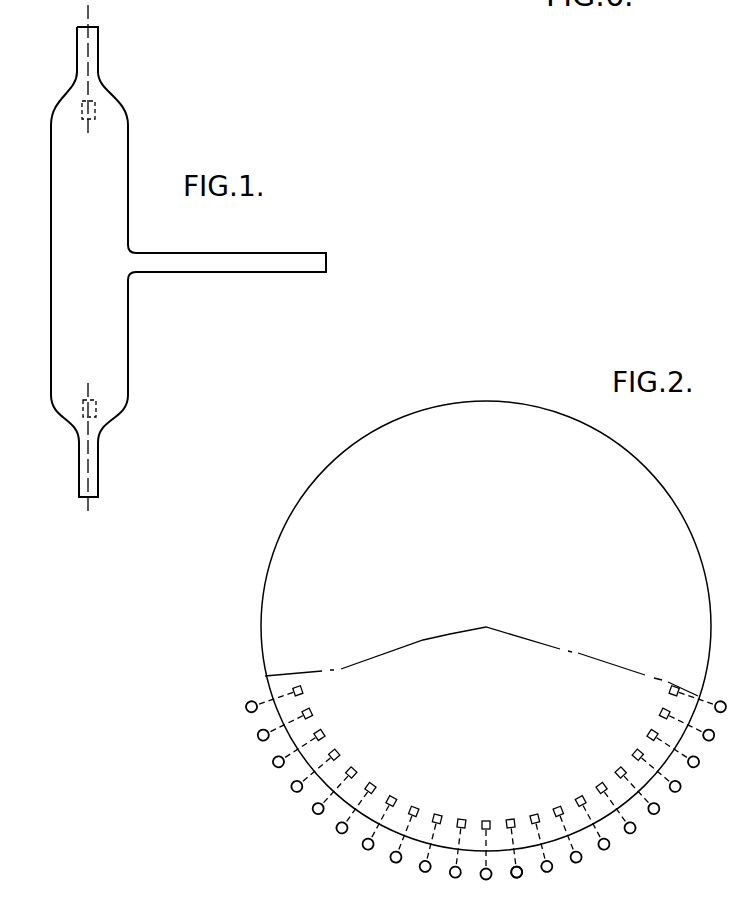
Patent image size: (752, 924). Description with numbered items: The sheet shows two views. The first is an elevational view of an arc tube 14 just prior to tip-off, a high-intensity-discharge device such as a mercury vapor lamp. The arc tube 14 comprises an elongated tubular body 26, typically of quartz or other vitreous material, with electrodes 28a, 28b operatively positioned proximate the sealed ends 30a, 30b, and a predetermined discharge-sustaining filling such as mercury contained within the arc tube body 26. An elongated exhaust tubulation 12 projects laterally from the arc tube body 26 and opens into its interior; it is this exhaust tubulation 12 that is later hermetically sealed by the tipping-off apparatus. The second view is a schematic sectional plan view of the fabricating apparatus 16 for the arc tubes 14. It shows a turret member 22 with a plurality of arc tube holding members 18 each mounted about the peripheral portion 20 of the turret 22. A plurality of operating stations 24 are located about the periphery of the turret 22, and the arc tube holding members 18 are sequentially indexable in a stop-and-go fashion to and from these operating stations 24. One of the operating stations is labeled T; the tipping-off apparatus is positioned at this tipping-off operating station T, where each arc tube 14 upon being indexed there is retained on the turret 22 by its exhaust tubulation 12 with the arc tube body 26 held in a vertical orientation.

In FIG. 1, the exhaust tubulation 12 is at (219, 273).
In FIG. 1, the arc tube 14 is at (158, 153).
In FIG. 2, the fabricating apparatus 16 is at (503, 626).
In FIG. 2, the arc tube holding members 18 is at (293, 686).
In FIG. 2, the peripheral portion 20 is at (702, 691).
In FIG. 2, the turret member 22 is at (678, 521).
In FIG. 2, the operating stations 24 is at (272, 762).
In FIG. 1, the tubular body 26 is at (51, 193).
In FIG. 1, the electrode 28a is at (97, 403).
In FIG. 1, the electrode 28b is at (105, 100).
In FIG. 1, the sealed end 30a is at (98, 467).
In FIG. 1, the sealed end 30b is at (98, 55).
In FIG. 2, the tipping-off operating station T is at (450, 875).